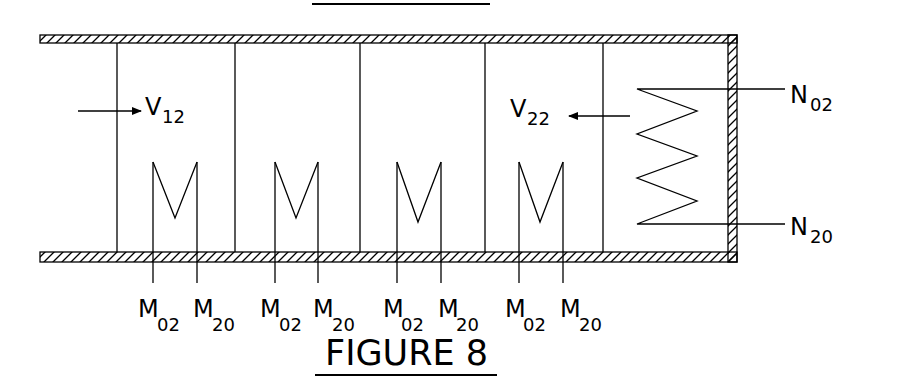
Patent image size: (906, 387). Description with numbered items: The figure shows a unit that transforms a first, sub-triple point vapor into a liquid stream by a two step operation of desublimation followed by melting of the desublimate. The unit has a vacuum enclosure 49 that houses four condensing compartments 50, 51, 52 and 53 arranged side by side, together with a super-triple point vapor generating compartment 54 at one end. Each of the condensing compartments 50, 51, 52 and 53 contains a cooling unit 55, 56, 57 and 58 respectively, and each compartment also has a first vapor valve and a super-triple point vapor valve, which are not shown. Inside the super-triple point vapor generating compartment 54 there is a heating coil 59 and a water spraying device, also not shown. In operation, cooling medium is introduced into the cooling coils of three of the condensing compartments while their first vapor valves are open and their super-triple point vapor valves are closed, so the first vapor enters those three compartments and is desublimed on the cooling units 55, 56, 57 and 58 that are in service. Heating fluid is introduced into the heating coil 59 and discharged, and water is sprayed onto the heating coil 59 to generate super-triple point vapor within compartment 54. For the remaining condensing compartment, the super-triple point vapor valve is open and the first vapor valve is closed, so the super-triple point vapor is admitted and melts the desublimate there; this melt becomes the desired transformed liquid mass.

The vacuum enclosure 49 is at (180, 36).
The condensing compartment 50 is at (197, 83).
The condensing compartment 51 is at (319, 83).
The condensing compartment 52 is at (442, 83).
The condensing compartment 53 is at (562, 83).
The super-triple point vapor generating compartment 54 is at (680, 81).
The cooling unit 55 is at (193, 172).
The cooling unit 56 is at (315, 172).
The cooling unit 57 is at (437, 176).
The cooling unit 58 is at (560, 176).
The heating coil 59 is at (697, 220).